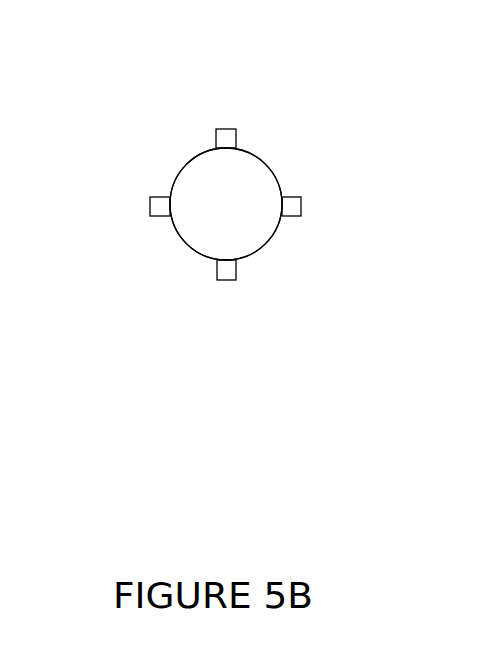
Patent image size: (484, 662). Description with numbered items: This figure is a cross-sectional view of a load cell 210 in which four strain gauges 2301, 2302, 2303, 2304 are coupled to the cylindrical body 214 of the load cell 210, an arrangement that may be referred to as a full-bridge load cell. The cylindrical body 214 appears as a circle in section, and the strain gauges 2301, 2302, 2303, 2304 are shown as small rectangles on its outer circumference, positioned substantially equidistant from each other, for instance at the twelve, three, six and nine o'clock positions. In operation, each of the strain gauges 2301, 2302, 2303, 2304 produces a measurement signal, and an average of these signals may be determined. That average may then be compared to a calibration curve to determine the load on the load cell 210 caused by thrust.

The load cell 210 is at (282, 78).
The cylindrical body 214 is at (263, 185).
The strain gauge 2301 is at (222, 133).
The strain gauge 2302 is at (298, 208).
The strain gauge 2303 is at (230, 275).
The strain gauge 2304 is at (158, 207).